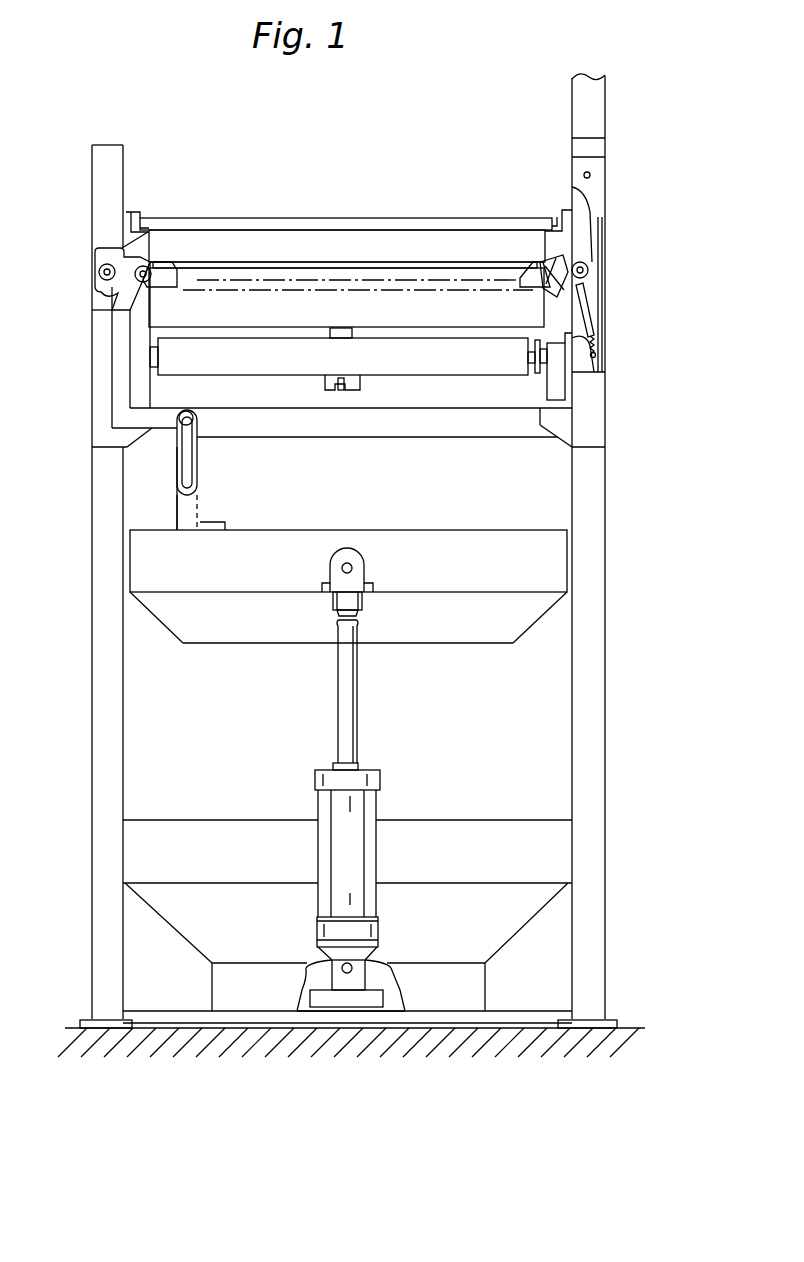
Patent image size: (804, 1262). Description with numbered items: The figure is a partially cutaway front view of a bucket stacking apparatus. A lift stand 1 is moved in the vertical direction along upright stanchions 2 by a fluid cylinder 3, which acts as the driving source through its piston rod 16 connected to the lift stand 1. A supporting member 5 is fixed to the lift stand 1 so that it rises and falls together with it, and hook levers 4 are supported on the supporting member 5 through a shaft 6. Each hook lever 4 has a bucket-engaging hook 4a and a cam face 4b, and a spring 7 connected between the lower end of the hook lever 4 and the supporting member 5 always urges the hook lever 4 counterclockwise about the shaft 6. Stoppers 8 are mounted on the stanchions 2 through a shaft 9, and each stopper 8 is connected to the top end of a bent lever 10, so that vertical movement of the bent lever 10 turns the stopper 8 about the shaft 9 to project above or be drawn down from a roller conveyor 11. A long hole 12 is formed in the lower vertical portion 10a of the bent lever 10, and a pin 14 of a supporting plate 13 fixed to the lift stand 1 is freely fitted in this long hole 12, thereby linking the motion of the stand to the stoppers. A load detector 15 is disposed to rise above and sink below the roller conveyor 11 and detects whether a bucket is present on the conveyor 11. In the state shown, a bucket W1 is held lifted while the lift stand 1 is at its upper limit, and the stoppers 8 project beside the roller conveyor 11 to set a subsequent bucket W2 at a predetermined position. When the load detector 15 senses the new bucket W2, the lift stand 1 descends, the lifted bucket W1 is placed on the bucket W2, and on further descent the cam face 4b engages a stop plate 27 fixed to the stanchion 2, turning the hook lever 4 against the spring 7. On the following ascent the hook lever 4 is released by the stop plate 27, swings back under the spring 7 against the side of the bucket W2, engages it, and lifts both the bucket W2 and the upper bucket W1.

The lift stand 1 is at (443, 543).
The stanchions 2 is at (100, 625).
The fluid cylinder 3 is at (360, 805).
The hook lever 4 is at (127, 235).
The bucket-engaging hook 4a is at (136, 210).
The cam face 4b is at (540, 262).
The supporting member 5 is at (582, 322).
The shaft 6 is at (588, 272).
The spring 7 is at (596, 352).
The stopper 8 is at (163, 278).
The shaft 9 is at (100, 277).
The bent lever 10 is at (118, 385).
The lower vertical portion 10a is at (172, 455).
The roller conveyor 11 is at (307, 380).
The long hole 12 is at (183, 480).
The supporting plate 13 is at (192, 510).
The pin 14 is at (193, 416).
The load detector 15 is at (350, 338).
The piston rod 16 is at (352, 713).
The stop plate 27 is at (575, 378).
The bucket W1 is at (283, 232).
The bucket W2 is at (452, 318).